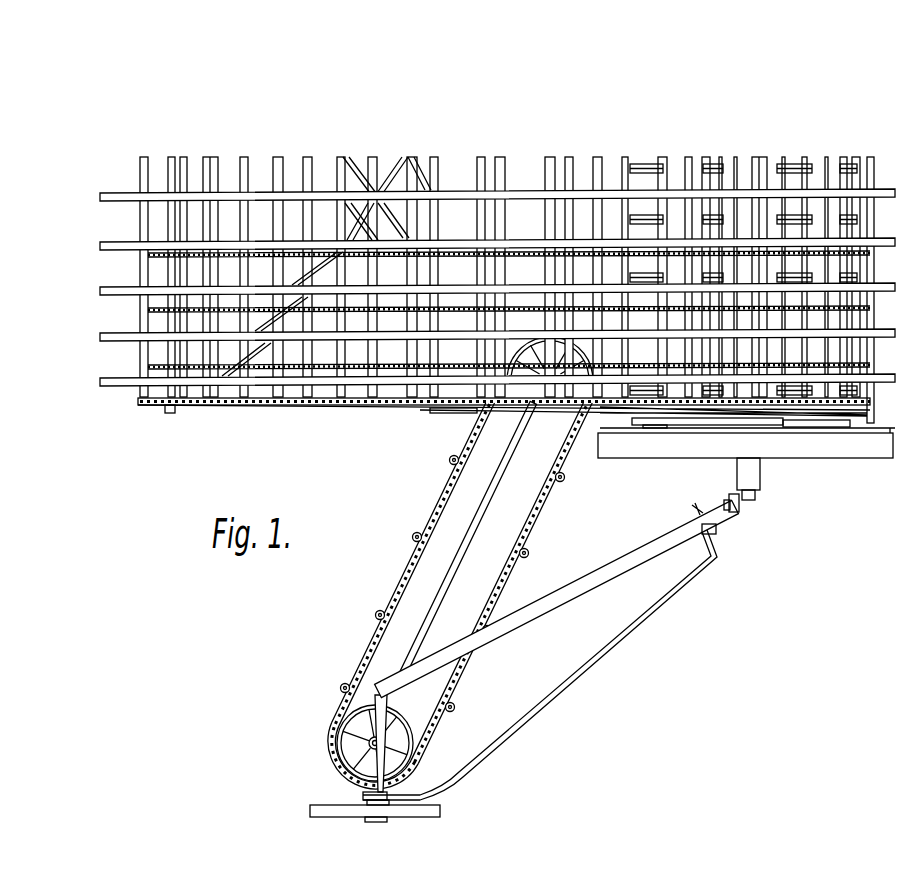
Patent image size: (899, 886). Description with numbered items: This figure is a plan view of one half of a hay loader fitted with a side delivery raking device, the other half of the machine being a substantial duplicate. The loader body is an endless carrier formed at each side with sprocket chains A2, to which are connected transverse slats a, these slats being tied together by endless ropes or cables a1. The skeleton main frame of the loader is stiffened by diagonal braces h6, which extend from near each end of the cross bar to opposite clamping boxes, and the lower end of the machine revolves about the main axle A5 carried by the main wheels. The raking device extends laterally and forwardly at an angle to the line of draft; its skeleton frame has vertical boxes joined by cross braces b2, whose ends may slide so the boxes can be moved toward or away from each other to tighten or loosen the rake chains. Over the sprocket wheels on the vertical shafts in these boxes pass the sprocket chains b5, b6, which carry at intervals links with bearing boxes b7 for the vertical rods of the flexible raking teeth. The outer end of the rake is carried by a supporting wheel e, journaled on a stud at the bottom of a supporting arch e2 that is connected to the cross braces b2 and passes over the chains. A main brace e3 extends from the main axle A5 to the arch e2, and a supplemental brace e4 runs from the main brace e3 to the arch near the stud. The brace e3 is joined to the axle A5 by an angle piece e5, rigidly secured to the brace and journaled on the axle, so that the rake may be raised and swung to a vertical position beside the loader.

The transverse slats a is at (480, 274).
The endless ropes or cables a1 is at (514, 253).
The diagonal braces h6 is at (345, 200).
The sprocket chains A2 is at (203, 405).
The main axle A5 is at (750, 501).
The cross braces b2 is at (490, 501).
The sprocket chain b5 is at (400, 583).
The sprocket chain b6 is at (420, 567).
The bearing boxes b7 is at (418, 535).
The supporting wheel e is at (440, 810).
The supporting arch e2 is at (378, 762).
The brace e3 is at (593, 580).
The supplemental brace e4 is at (540, 662).
The angle piece e5 is at (735, 492).